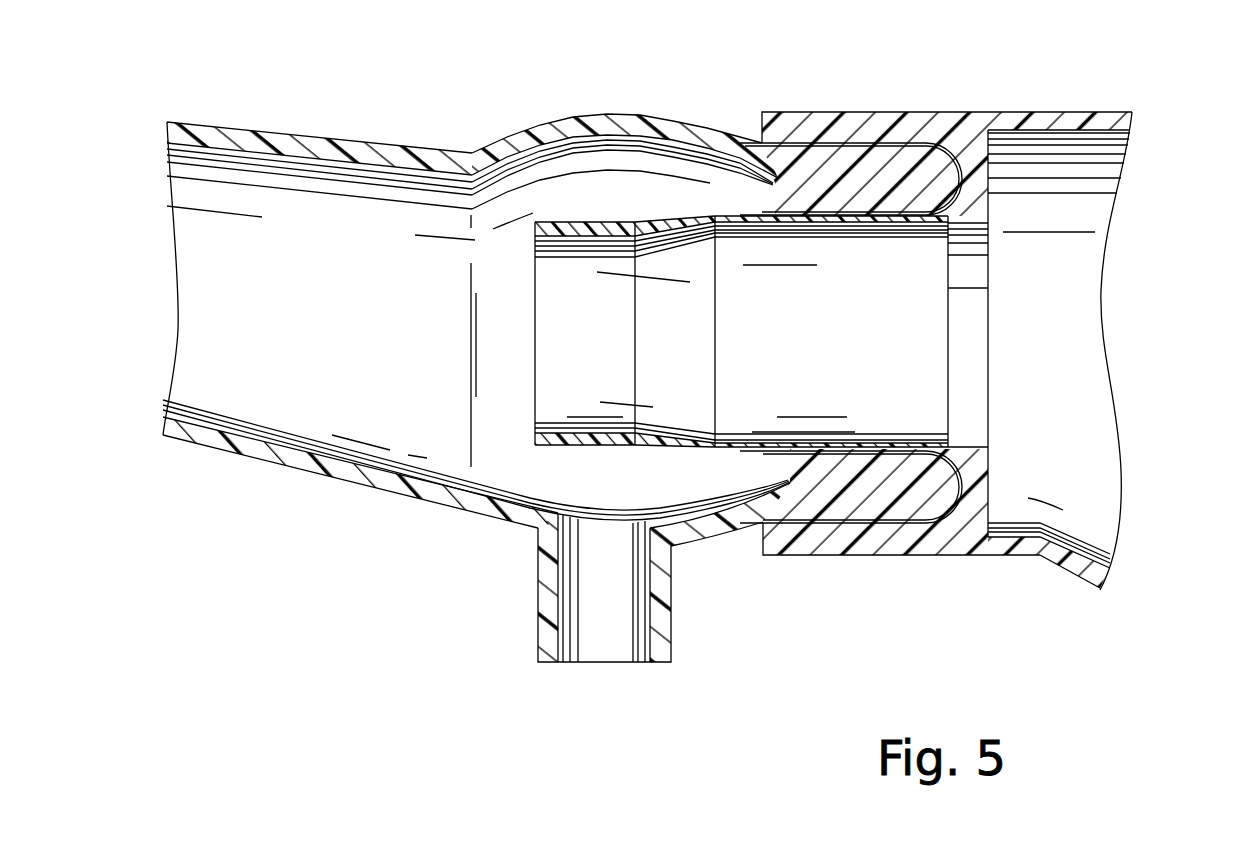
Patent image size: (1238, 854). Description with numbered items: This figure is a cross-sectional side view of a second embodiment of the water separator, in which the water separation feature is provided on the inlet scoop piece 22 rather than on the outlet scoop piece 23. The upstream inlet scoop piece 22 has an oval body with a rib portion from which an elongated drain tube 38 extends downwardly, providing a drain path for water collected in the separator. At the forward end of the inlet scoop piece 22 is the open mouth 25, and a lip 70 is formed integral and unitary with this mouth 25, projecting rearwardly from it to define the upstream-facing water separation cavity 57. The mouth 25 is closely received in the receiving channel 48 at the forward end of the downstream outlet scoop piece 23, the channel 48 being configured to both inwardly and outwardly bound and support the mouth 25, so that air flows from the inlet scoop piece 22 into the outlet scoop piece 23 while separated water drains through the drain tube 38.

The inlet scoop piece 22 is at (373, 141).
The outlet scoop piece 23 is at (1040, 111).
The mouth 25 is at (928, 172).
The drain tube 38 is at (538, 597).
The receiving channel 48 is at (967, 158).
The water separation cavity 57 is at (568, 168).
The lip 70 is at (618, 218).